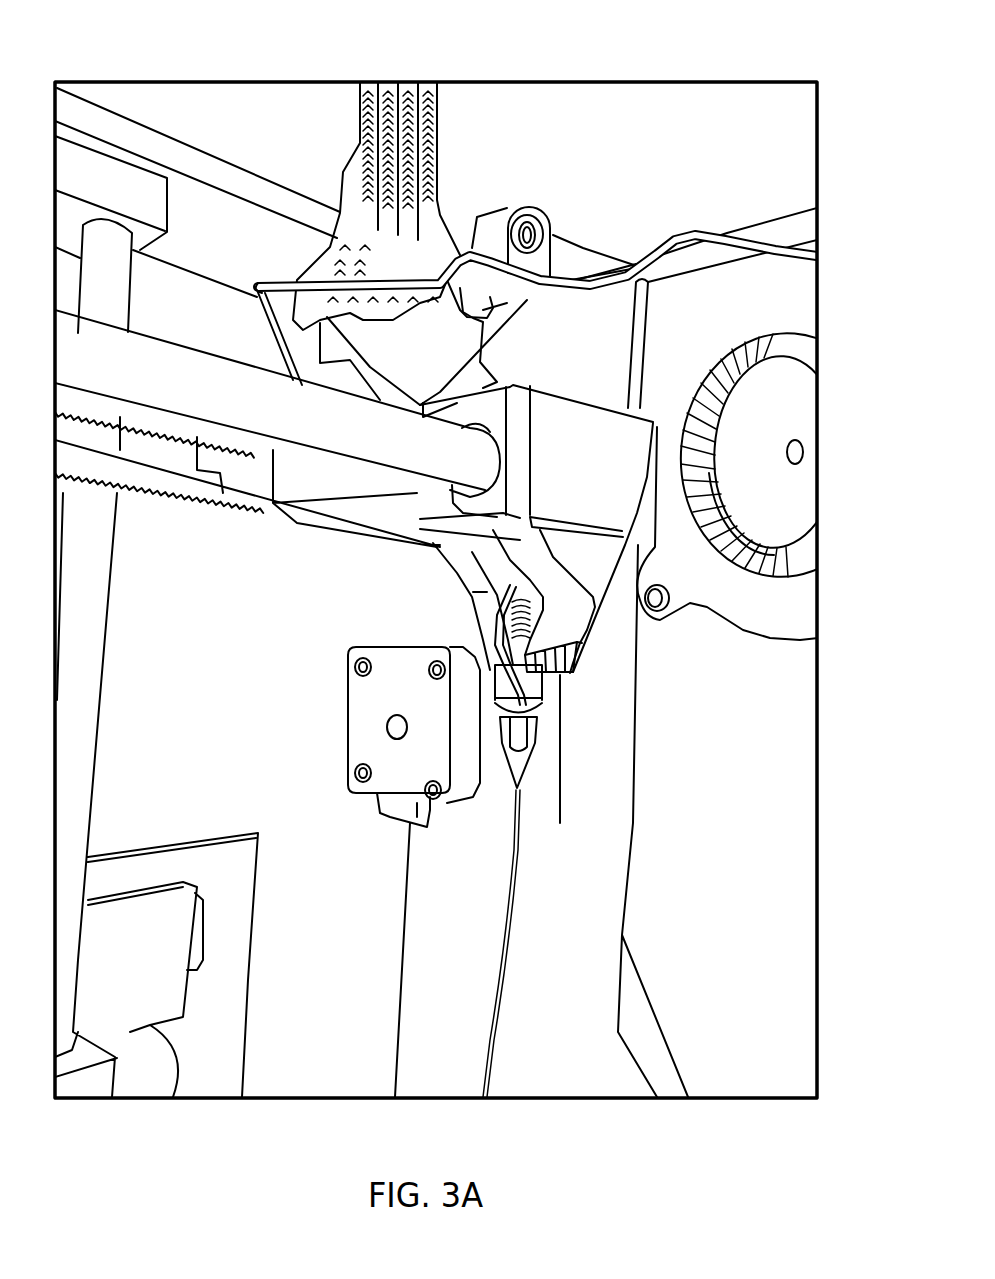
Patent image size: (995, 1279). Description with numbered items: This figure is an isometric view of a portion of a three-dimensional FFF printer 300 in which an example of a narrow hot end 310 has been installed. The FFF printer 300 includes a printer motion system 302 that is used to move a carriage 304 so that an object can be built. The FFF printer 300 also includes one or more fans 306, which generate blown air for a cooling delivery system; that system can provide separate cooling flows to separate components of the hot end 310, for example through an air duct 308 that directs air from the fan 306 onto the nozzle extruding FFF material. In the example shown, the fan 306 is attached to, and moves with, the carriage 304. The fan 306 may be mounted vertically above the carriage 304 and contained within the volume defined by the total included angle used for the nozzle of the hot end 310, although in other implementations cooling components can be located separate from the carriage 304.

The 3D FFF printer 300 is at (735, 120).
The 3D printer motion system 302 is at (323, 560).
The carriage 304 is at (497, 392).
The fan 306 is at (715, 295).
The air duct 308 is at (582, 643).
The narrow hot end 310 is at (597, 717).